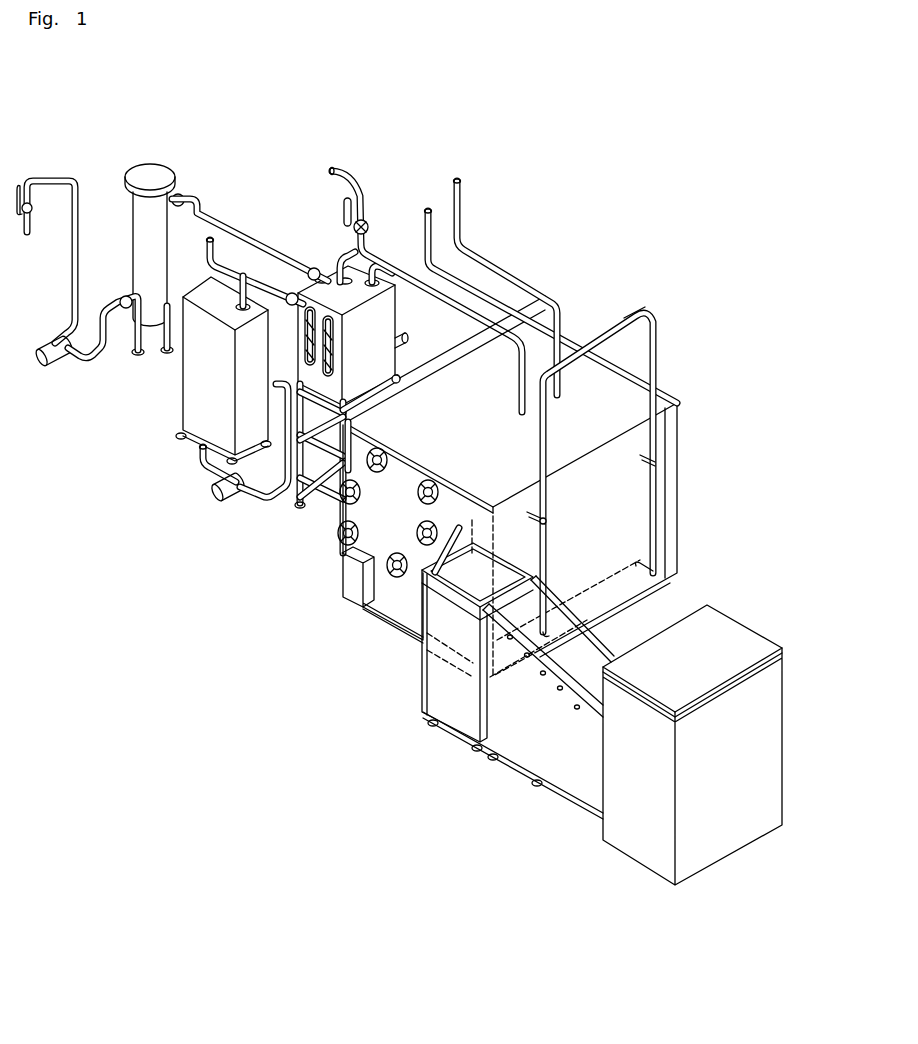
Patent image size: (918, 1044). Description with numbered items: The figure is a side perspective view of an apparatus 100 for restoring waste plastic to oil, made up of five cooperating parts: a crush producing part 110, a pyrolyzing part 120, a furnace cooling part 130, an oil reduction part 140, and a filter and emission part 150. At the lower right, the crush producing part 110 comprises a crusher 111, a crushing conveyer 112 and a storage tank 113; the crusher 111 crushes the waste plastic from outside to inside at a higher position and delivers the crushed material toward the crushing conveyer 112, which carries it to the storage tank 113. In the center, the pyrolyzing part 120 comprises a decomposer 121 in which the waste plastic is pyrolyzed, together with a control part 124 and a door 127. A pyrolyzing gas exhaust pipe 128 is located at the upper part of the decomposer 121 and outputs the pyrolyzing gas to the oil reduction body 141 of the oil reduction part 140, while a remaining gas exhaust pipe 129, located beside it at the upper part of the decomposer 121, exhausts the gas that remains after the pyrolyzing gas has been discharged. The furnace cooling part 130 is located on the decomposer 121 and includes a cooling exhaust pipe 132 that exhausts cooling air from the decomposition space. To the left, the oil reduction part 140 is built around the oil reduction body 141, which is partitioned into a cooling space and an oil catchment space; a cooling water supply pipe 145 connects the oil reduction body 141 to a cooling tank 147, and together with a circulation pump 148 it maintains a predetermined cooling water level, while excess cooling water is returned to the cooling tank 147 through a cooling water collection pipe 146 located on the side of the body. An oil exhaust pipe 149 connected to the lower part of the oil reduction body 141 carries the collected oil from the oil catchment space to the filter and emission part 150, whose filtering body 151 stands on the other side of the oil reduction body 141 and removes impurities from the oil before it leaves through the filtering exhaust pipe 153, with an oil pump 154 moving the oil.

The apparatus for restoring waste plastic to oil 100 is at (556, 208).
The crush producing part 110 is at (718, 603).
The crusher 111 is at (634, 840).
The crushing conveyer 112 is at (529, 740).
The storage tank 113 is at (436, 689).
The pyrolyzing part 120 is at (583, 322).
The decomposer 121 is at (622, 396).
The control part 124 is at (324, 487).
The door 127 is at (381, 543).
The pyrolyzing gas exhaust pipe 128 is at (447, 292).
The remaining gas exhaust pipe 129 is at (503, 273).
The furnace cooling part 130 is at (665, 318).
The cooling exhaust pipe 132 is at (632, 310).
The oil reduction part 140 is at (378, 234).
The oil reduction body 141 is at (333, 273).
The cooling water supply pipe 145 is at (208, 468).
The cooling water collection pipe 146 is at (262, 283).
The cooling tank 147 is at (196, 390).
The circulation pump 148 is at (216, 493).
The oil exhaust pipe 149 is at (208, 222).
The filter and emission part 150 is at (164, 156).
The filtering body 151 is at (143, 210).
The filtering exhaust pipe 153 is at (64, 178).
The oil pump 154 is at (62, 372).